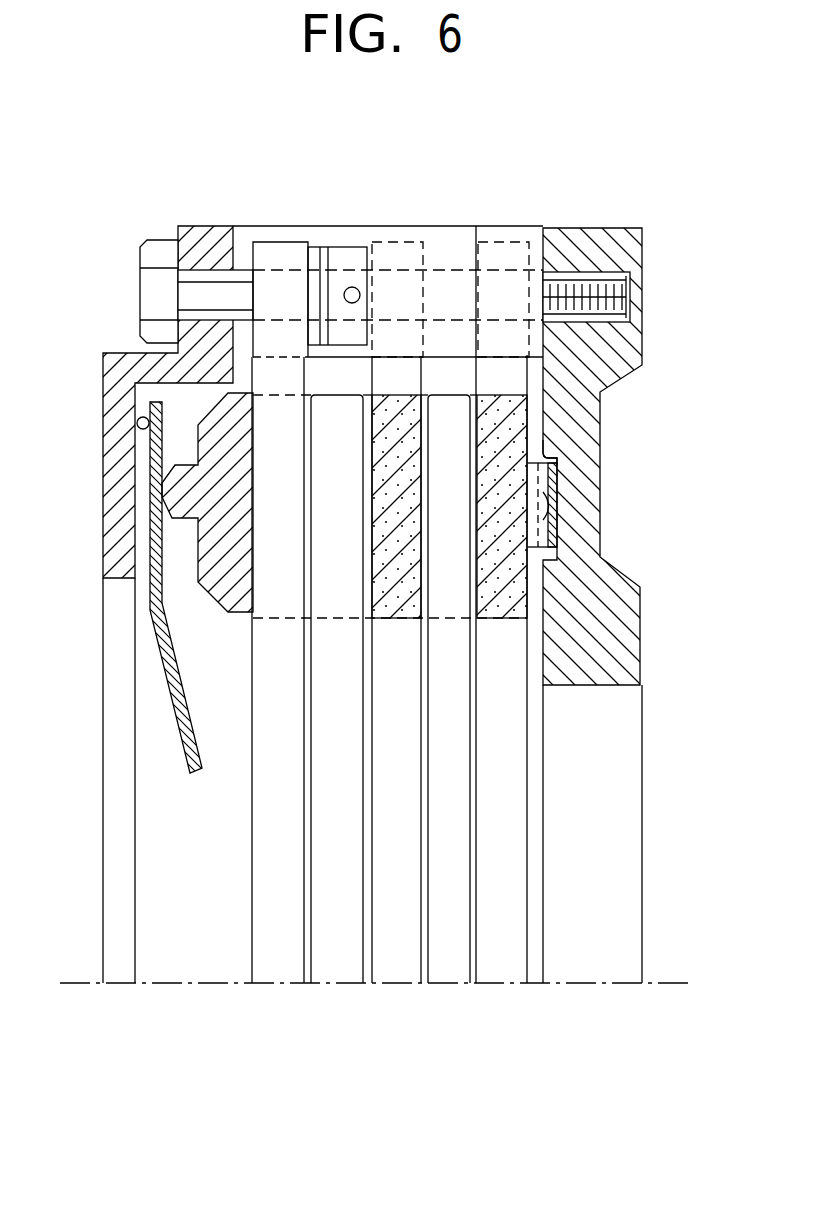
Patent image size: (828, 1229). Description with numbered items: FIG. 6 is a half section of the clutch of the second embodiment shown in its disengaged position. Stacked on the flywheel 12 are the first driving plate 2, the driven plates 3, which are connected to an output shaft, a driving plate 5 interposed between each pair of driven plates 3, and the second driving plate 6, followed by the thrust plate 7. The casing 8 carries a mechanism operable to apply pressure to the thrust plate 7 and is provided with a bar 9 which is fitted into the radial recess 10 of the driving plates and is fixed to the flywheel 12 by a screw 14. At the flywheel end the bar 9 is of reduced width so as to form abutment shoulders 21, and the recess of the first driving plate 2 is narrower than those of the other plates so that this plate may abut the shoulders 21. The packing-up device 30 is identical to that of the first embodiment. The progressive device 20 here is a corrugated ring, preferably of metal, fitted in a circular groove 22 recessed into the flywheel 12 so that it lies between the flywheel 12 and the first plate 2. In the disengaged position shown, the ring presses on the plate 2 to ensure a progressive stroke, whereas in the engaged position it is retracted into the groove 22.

The first driving plate 2 is at (505, 958).
The driven plates 3 is at (341, 955).
The driving plate 5 is at (400, 958).
The second driving plate 6 is at (280, 952).
The thrust plate 7 is at (226, 558).
The casing 8 is at (117, 481).
The bar 9 is at (443, 245).
The radial recess 10 is at (548, 373).
The flywheel 12 is at (601, 608).
The screw 14 is at (607, 292).
The progressive device 20 is at (565, 494).
The abutment shoulders 21 is at (481, 253).
The groove 22 is at (553, 441).
The packing-up device 30 is at (338, 250).